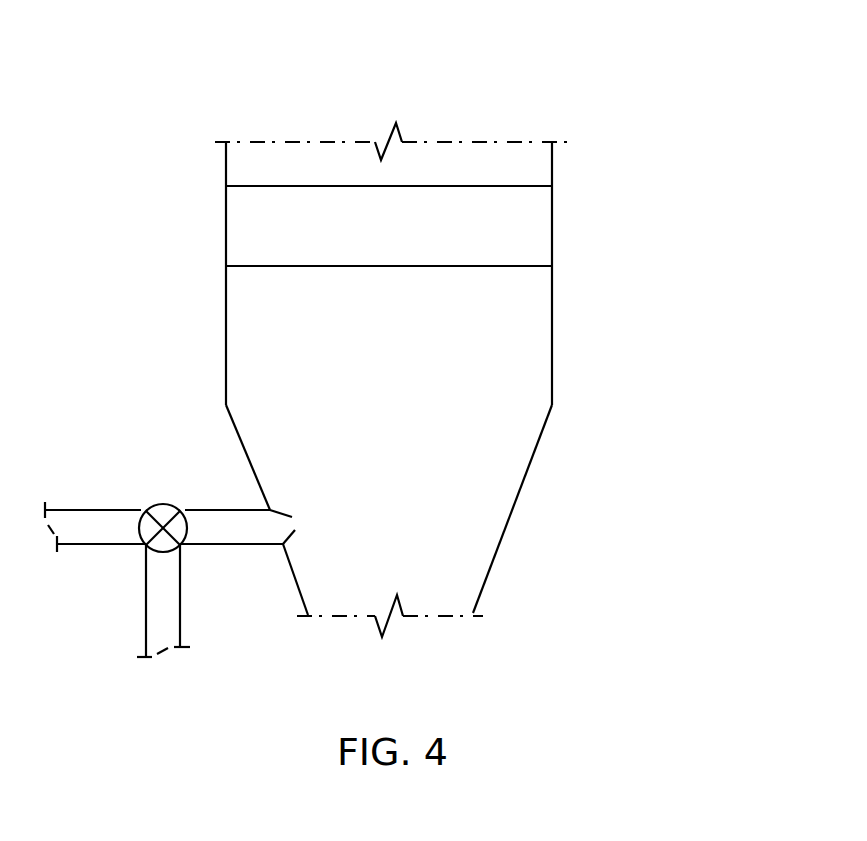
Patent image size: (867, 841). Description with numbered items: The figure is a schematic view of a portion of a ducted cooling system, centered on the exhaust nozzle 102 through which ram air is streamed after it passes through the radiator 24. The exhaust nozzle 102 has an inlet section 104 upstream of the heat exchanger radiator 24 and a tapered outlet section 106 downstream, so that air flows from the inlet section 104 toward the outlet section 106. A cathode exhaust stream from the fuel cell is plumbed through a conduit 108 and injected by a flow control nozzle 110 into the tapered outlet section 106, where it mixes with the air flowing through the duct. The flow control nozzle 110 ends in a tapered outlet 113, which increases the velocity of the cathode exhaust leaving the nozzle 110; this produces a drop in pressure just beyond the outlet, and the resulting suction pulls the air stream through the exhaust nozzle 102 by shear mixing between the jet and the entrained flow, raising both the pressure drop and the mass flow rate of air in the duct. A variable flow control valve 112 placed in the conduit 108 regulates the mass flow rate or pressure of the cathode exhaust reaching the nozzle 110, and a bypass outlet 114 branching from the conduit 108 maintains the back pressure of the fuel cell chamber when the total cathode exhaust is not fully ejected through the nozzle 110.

The inlet section 104 is at (175, 85).
The exhaust nozzle 102 is at (582, 303).
The radiator 24 is at (245, 222).
The tapered outlet section 106 is at (515, 513).
The conduit 108 is at (217, 508).
The flow control nozzle 110 is at (227, 547).
The variable flow control valve 112 is at (162, 505).
The tapered outlet 113 is at (293, 540).
The bypass outlet 114 is at (143, 637).